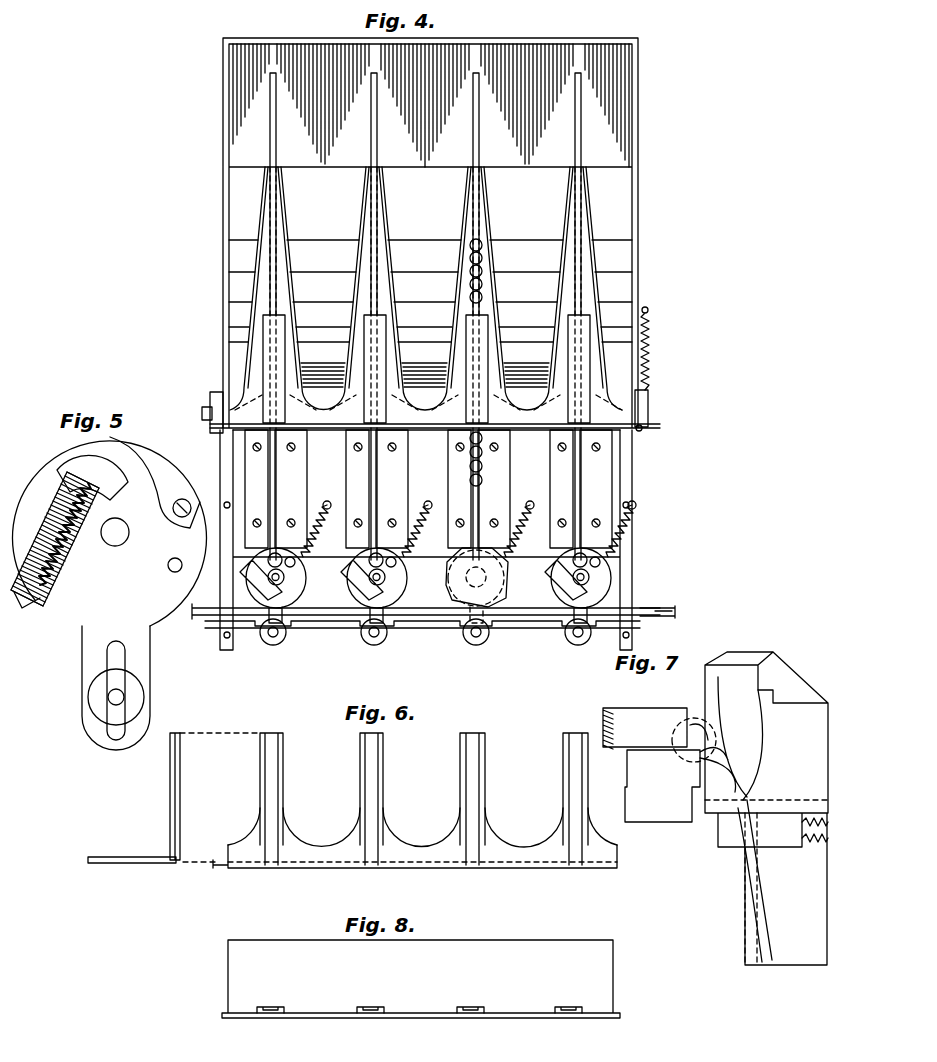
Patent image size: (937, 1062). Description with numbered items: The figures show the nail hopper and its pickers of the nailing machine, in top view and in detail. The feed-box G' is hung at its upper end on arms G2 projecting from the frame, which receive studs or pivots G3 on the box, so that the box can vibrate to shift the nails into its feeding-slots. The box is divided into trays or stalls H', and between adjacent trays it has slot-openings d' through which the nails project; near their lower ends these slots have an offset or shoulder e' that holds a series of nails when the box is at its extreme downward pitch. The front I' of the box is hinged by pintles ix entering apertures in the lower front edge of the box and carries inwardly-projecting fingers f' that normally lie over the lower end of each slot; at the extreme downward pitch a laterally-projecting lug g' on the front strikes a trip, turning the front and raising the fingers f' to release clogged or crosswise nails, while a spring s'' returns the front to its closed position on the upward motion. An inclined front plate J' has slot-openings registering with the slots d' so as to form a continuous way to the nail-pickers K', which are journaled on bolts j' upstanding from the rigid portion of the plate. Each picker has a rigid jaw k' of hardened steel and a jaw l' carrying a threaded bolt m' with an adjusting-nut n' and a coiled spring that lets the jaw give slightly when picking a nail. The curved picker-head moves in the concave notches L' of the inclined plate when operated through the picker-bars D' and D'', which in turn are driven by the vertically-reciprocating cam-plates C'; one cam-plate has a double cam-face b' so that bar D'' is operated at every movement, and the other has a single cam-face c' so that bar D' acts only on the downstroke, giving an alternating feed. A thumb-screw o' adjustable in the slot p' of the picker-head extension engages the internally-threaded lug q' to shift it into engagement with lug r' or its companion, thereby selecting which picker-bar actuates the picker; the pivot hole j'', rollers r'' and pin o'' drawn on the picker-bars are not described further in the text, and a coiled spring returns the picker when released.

In FIG. 4, the trays or stalls H' is at (431, 105).
In FIG. 4, the slot-openings d' is at (418, 248).
In FIG. 4, the feed-box G' is at (408, 288).
In FIG. 4, the offset or shoulder e' is at (430, 291).
In FIG. 4, the fingers f' is at (426, 369).
In FIG. 6, the fingers f' is at (384, 799).
In FIG. 8, the fingers f' is at (419, 1001).
In FIG. 4, the arms G2 is at (690, 413).
In FIG. 4, the studs or pivots G3 is at (668, 388).
In FIG. 4, the spring s'' is at (656, 348).
In FIG. 4, the laterally-projecting lug g' is at (654, 433).
In FIG. 4, the front I' is at (426, 441).
In FIG. 6, the front I' is at (352, 810).
In FIG. 8, the front I' is at (421, 979).
In FIG. 4, the inclined front plate J' is at (428, 489).
In FIG. 4, the connecting rod i'' is at (425, 494).
In FIG. 4, the concave notches L' is at (468, 529).
In FIG. 4, the nail-pickers K' is at (425, 585).
In FIG. 5, the nail-pickers K' is at (109, 595).
In FIG. 4, the rigid jaw k' is at (445, 551).
In FIG. 5, the rigid jaw k' is at (155, 482).
In FIG. 4, the bolts j' is at (411, 586).
In FIG. 4, the lug r' is at (400, 619).
In FIG. 4, the picker-bar D' is at (426, 604).
In FIG. 7, the picker-bar D' is at (645, 728).
In FIG. 4, the picker-bar D'' is at (414, 636).
In FIG. 7, the picker-bar D'' is at (662, 786).
In FIG. 4, the roller r'' is at (438, 634).
In FIG. 4, the roller pin o'' is at (254, 640).
In FIG. 4, the cam-plates C' is at (670, 613).
In FIG. 7, the cam-plates C' is at (766, 808).
In FIG. 5, the jaw l' is at (92, 477).
In FIG. 5, the threaded bolt m' is at (55, 539).
In FIG. 5, the adjusting-nut n' is at (27, 608).
In FIG. 5, the cam hole j'' is at (112, 540).
In FIG. 5, the slot p' is at (126, 690).
In FIG. 5, the thumb-screw o' is at (116, 697).
In FIG. 5, the internally-threaded lug q' is at (125, 696).
In FIG. 6, the pintles or projections ix is at (620, 850).
In FIG. 8, the pintles or projections ix is at (635, 998).
In FIG. 7, the single cam-face c' is at (750, 738).
In FIG. 7, the double cam-face b' is at (745, 881).